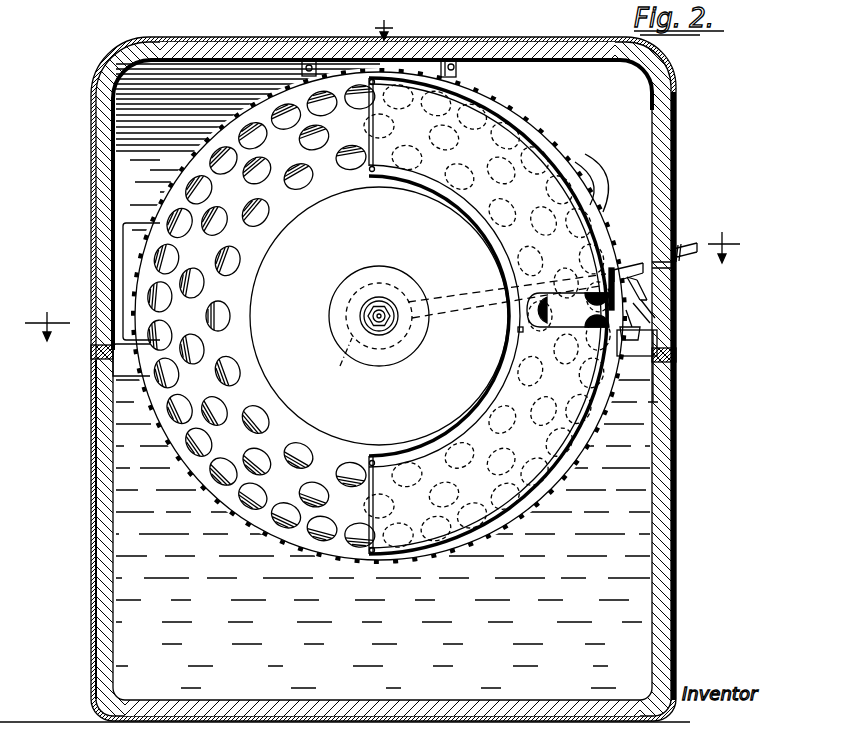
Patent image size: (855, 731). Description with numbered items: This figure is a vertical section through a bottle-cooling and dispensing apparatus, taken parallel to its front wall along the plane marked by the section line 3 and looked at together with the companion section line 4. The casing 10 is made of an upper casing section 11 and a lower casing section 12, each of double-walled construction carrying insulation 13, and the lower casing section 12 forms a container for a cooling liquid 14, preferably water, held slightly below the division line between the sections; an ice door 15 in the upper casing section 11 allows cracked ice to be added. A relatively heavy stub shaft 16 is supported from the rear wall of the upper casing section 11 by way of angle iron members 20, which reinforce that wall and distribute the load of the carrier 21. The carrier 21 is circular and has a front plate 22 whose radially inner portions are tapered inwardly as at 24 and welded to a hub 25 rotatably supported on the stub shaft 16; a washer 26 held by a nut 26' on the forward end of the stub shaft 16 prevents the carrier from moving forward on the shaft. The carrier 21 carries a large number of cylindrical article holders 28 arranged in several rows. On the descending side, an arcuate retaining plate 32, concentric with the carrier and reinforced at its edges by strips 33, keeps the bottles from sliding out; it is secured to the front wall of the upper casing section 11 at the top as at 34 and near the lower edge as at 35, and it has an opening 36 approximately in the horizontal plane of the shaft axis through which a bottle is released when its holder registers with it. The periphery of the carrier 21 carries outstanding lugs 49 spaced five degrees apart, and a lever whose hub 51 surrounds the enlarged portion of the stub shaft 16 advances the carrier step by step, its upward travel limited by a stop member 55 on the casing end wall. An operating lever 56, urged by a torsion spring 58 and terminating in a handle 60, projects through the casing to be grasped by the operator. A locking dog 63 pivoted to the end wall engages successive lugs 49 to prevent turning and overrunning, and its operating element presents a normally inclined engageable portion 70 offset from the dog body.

The section line 3- 3 is at (381, 283).
The section line 4- 4 is at (384, 22).
The casing 10 is at (676, 119).
The upper casing section 11 is at (626, 37).
The lower casing section 12 is at (670, 566).
The insulation 13 is at (668, 162).
The cooling liquid 14 is at (130, 436).
The ice door 15 is at (123, 262).
The stub shaft 16 is at (396, 302).
The angle iron members 20 is at (293, 61).
The carrier 21 is at (216, 128).
The front plate 22 is at (262, 381).
The tapered inner portions 24 is at (379, 316).
The hub 25 is at (399, 316).
The washer 26 is at (363, 316).
The nut 26' is at (379, 290).
The article holders 28 is at (294, 177).
The retaining plate 32 is at (530, 150).
The reinforcing strips 33 is at (510, 117).
The top securing means 34 is at (373, 173).
The lower securing means 35 is at (518, 330).
The opening 36 is at (527, 300).
The lugs 49 is at (582, 156).
The lever hub 51 is at (336, 360).
The stop member 55 is at (636, 262).
The operating lever 56 is at (676, 260).
The torsion spring 58 is at (652, 295).
The handle 60 is at (693, 250).
The locking dog 63 is at (675, 332).
The engageable portion 70 is at (661, 305).